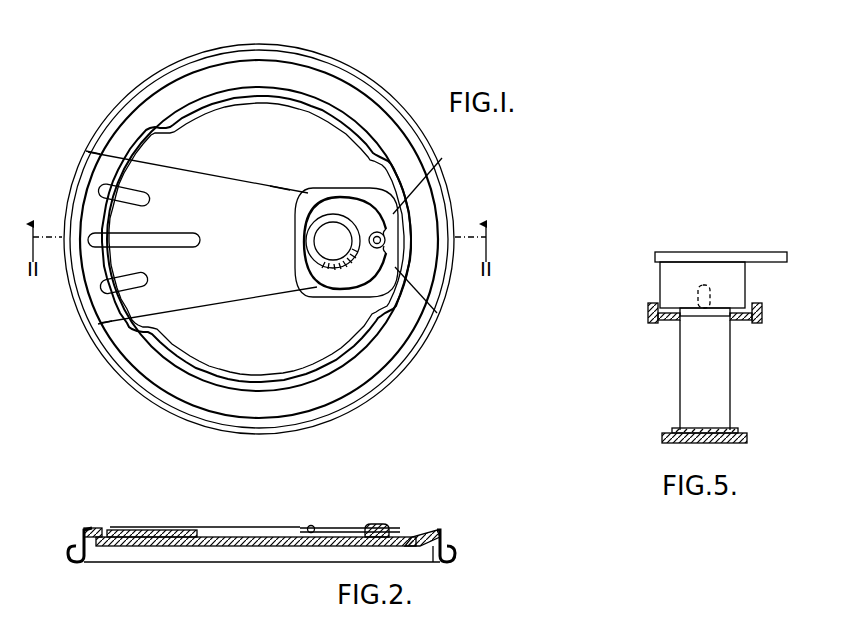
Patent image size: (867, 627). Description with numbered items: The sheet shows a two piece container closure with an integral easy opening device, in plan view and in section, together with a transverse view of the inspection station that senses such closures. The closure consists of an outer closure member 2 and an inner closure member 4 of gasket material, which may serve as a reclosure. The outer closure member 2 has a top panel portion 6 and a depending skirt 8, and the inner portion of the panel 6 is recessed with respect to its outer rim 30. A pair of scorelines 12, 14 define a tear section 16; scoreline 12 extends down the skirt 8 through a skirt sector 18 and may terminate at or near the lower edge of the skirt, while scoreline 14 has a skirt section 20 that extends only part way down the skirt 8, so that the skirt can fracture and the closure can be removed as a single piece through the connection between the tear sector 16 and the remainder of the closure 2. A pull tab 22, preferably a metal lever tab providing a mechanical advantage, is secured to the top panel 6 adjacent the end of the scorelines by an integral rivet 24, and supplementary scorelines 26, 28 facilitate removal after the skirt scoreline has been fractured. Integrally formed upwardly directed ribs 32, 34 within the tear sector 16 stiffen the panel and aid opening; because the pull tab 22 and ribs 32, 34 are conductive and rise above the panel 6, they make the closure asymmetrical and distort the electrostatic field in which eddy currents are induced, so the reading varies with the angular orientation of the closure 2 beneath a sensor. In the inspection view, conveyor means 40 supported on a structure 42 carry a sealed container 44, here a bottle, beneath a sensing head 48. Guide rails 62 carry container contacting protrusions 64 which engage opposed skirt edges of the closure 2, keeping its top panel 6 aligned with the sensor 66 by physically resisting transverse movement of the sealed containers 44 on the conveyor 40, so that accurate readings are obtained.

In FIG. 1, the outer closure member 2 is at (332, 82).
In FIG. 2, the outer closure member 2 is at (80, 536).
In FIG. 5, the outer closure member 2 is at (706, 318).
In FIG. 1, the inner closure member 4 is at (178, 62).
In FIG. 2, the inner closure member 4 is at (91, 556).
In FIG. 1, the top panel portion 6 is at (270, 113).
In FIG. 2, the top panel portion 6 is at (250, 537).
In FIG. 2, the depending skirt 8 is at (450, 538).
In FIG. 1, the scoreline 12 is at (242, 178).
In FIG. 1, the scoreline 14 is at (237, 300).
In FIG. 1, the tear section 16 is at (278, 190).
In FIG. 1, the skirt sector 18 is at (92, 152).
In FIG. 1, the skirt section 20 is at (100, 327).
In FIG. 1, the pull tab 22 is at (347, 190).
In FIG. 2, the pull tab 22 is at (312, 527).
In FIG. 1, the integral rivet 24 is at (371, 247).
In FIG. 2, the integral rivet 24 is at (378, 524).
In FIG. 1, the supplementary scoreline 26 is at (431, 179).
In FIG. 1, the supplementary scoreline 28 is at (437, 313).
In FIG. 1, the outer rim 30 is at (383, 364).
In FIG. 2, the outer rim 30 is at (432, 530).
In FIG. 1, the rib 32 is at (150, 198).
In FIG. 2, the rib 32 is at (112, 526).
In FIG. 1, the rib 34 is at (190, 243).
In FIG. 2, the rib 34 is at (162, 528).
In FIG. 5, the conveyor means 40 is at (672, 430).
In FIG. 5, the supporting structure 42 is at (665, 445).
In FIG. 5, the sealed container 44 is at (730, 372).
In FIG. 5, the sensing head 48 is at (660, 270).
In FIG. 5, the guide rail 62 is at (648, 308).
In FIG. 5, the container contacting protrusion 64 is at (668, 322).
In FIG. 5, the sensor 66 is at (712, 283).